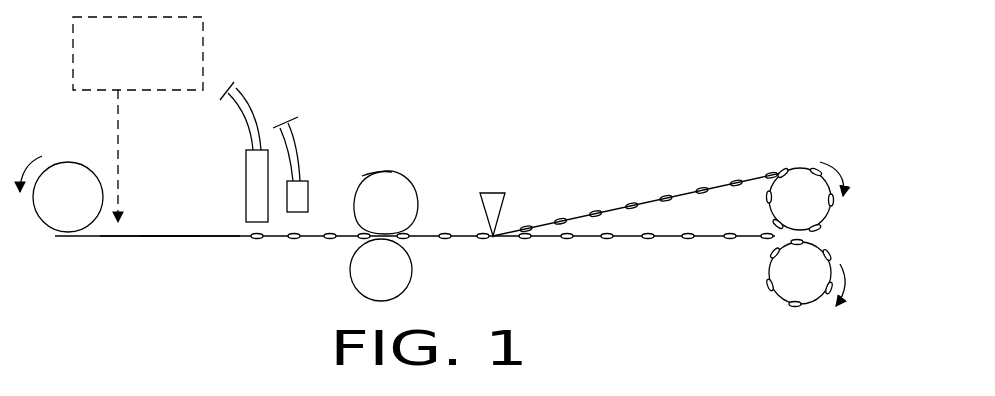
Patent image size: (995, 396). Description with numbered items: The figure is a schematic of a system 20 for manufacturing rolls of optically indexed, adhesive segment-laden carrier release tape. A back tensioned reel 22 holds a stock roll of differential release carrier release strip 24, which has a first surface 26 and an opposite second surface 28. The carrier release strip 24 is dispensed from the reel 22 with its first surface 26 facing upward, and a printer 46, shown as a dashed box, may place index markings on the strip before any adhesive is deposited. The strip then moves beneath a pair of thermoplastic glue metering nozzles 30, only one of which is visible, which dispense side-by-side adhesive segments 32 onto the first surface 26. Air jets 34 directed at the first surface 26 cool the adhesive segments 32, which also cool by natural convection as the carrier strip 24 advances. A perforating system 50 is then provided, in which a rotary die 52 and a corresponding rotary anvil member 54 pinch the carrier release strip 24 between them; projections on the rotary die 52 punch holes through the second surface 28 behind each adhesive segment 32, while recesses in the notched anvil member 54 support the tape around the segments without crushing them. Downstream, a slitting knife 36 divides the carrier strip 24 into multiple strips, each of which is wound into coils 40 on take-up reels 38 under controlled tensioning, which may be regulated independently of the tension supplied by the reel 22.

The system 20 is at (607, 118).
The back tensioned reel 22 is at (72, 152).
The carrier release strip 24 is at (88, 238).
The first surface 26 is at (170, 228).
The second surface 28 is at (147, 242).
The thermoplastic glue metering nozzles 30 is at (246, 178).
The adhesive segments 32 is at (329, 239).
The air jets 34 is at (308, 192).
The slitting knife 36 is at (508, 202).
The take-up reels 38 is at (826, 224).
The coils 40 is at (808, 158).
The printer 46 is at (203, 62).
The perforating system 50 is at (410, 172).
The rotary die 52 is at (411, 262).
The rotary anvil member 54 is at (378, 175).